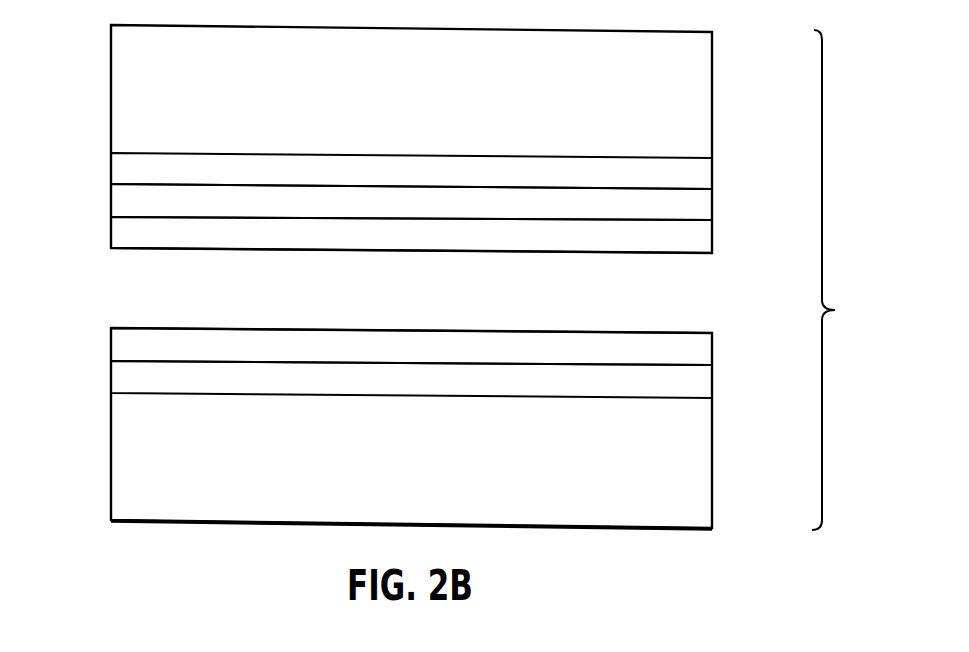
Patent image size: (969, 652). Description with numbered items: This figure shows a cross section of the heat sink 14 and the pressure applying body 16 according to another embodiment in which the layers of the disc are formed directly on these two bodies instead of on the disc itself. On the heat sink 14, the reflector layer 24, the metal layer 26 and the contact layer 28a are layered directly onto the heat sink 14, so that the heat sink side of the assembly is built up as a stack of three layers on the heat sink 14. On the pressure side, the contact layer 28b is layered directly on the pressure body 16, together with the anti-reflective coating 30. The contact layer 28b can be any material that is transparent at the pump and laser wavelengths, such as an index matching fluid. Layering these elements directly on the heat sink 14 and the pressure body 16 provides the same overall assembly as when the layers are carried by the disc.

The heat sink 14 is at (93, 192).
The pressure applying body 16 is at (98, 484).
The reflector layer 24 is at (712, 170).
The metal layer 26 is at (712, 203).
The contact layer 28a is at (712, 237).
The contact layer 28b is at (712, 350).
The anti-reflective coating 30 is at (712, 383).